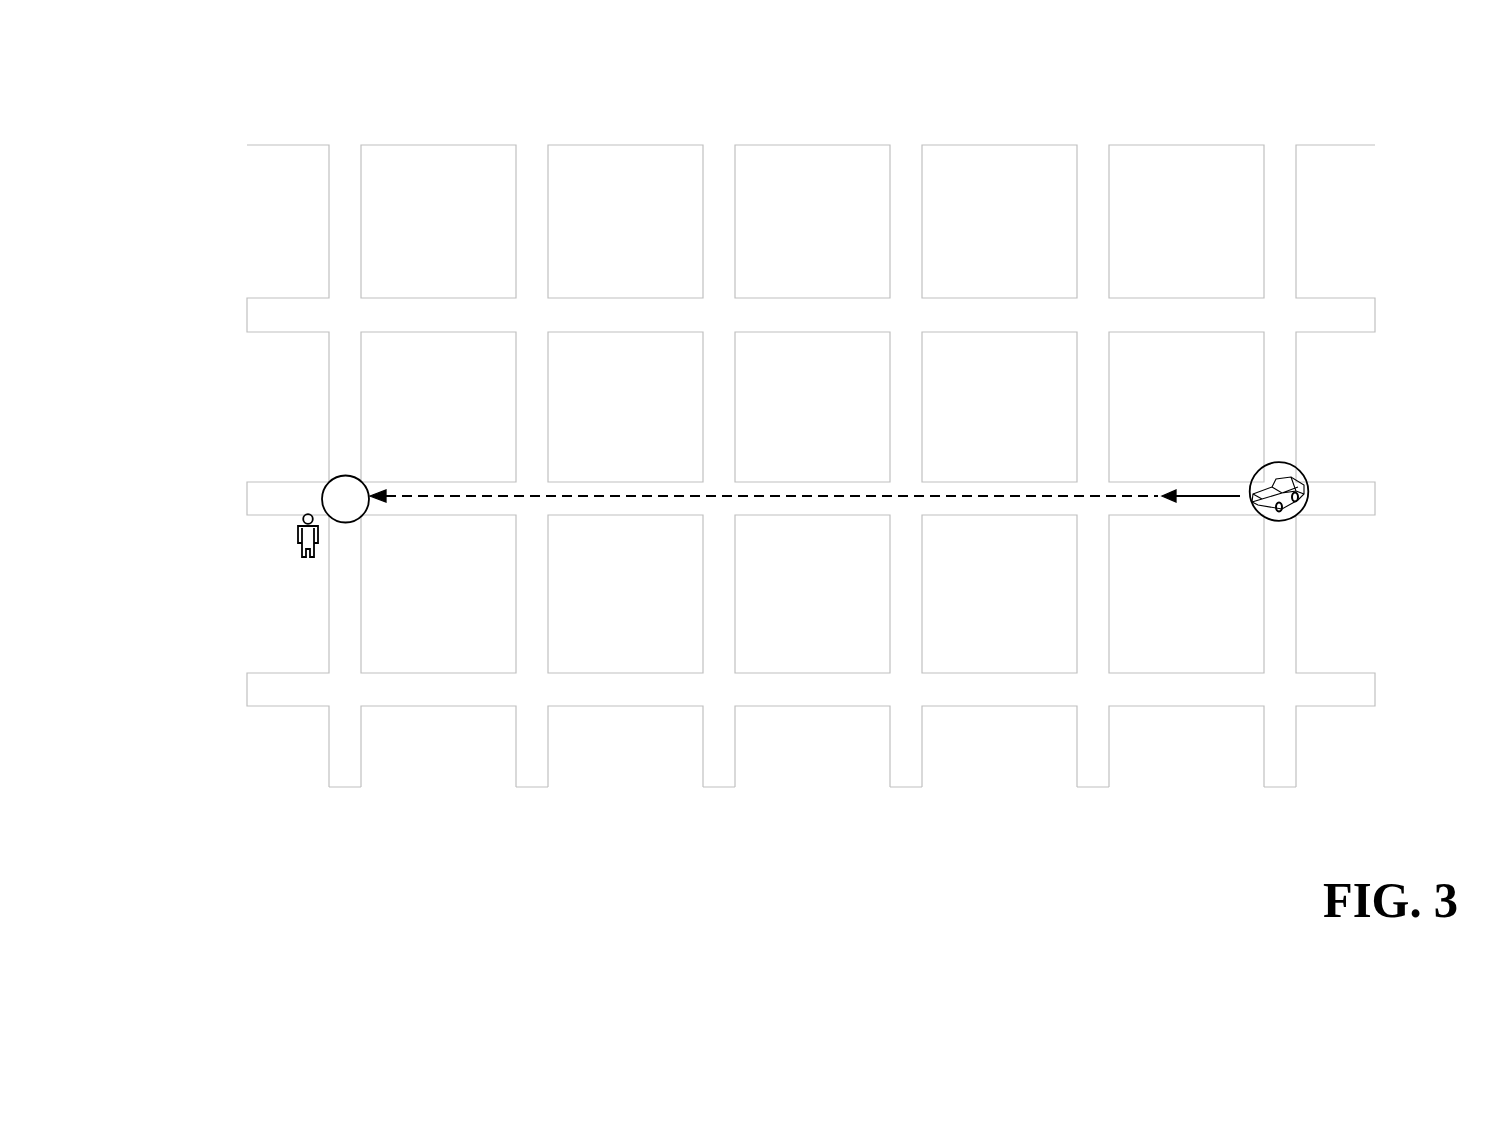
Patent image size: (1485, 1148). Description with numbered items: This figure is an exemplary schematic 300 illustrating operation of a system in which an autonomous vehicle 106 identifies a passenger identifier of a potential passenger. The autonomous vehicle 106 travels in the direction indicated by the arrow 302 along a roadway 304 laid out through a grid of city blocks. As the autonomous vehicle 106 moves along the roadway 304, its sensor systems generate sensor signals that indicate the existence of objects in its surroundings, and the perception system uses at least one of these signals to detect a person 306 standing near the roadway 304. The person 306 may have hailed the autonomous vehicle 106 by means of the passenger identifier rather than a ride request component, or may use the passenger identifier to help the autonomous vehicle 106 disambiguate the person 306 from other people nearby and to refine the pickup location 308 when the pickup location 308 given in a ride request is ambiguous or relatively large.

The schematic 300 is at (205, 110).
The autonomous vehicle 106 is at (1302, 470).
The arrow 302 is at (1227, 497).
The roadway 304 is at (846, 493).
The person 306 is at (308, 558).
The pickup location 308 is at (329, 481).